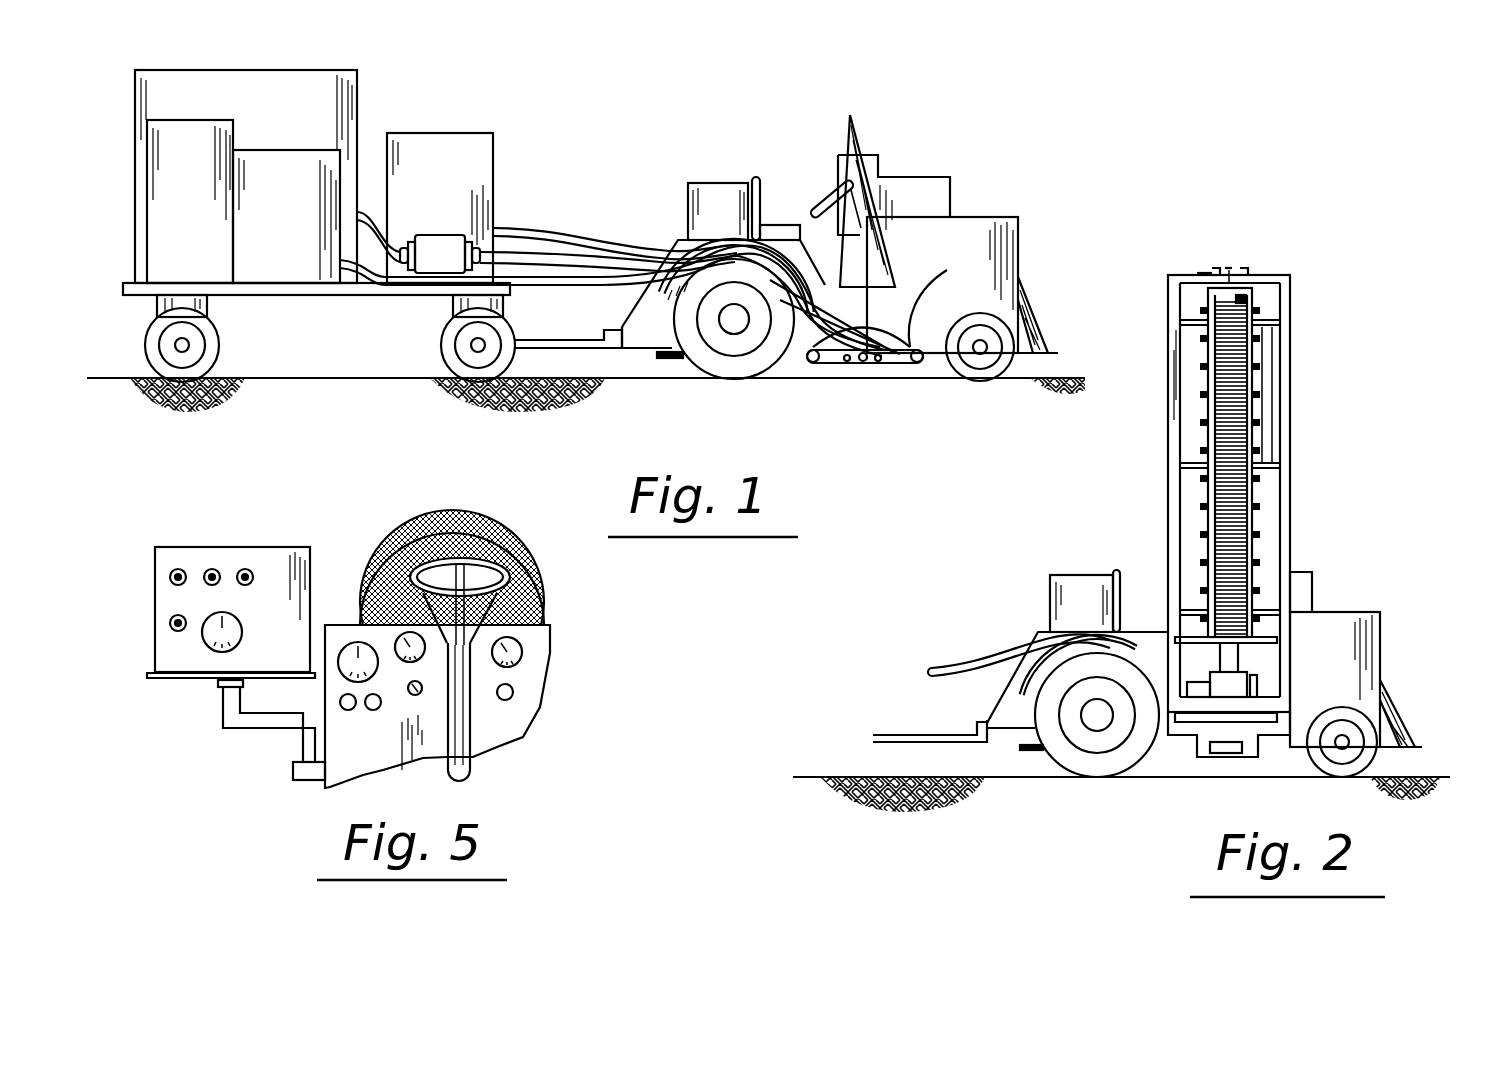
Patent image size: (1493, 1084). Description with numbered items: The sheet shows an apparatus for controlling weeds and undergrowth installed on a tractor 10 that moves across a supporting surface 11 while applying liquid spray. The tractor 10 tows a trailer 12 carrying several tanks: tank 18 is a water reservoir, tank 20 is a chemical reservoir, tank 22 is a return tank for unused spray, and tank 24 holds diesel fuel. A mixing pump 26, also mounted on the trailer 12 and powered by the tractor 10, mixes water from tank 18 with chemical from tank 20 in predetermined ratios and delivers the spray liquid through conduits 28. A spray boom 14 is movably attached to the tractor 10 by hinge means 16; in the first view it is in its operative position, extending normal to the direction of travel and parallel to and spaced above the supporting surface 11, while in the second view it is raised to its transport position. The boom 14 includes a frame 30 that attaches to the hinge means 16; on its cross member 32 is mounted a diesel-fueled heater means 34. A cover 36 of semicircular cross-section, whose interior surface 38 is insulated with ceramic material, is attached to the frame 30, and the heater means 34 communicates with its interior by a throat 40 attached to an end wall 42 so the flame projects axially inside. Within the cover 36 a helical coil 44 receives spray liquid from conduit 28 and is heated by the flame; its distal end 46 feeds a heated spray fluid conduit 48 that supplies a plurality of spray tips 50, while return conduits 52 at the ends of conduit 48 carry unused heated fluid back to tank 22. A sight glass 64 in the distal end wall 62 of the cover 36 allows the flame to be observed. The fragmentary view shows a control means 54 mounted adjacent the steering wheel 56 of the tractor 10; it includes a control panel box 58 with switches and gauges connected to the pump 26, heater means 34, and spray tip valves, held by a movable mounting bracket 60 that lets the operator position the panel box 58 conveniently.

In FIG. 1, the tractor 10 is at (1003, 215).
In FIG. 2, the tractor 10 is at (1350, 612).
In FIG. 1, the supporting surface 11 is at (645, 447).
In FIG. 2, the supporting surface 11 is at (1055, 843).
In FIG. 1, the trailer 12 is at (267, 297).
In FIG. 1, the spray boom 14 is at (850, 368).
In FIG. 2, the spray boom 14 is at (1360, 372).
In FIG. 2, the hinge means 16 is at (1203, 757).
In FIG. 1, the tank 18 is at (312, 109).
In FIG. 1, the tank 20 is at (265, 208).
In FIG. 1, the tank 22 is at (480, 179).
In FIG. 1, the tank 24 is at (207, 189).
In FIG. 1, the mixing pump 26 is at (438, 267).
In FIG. 1, the conduits 28 is at (373, 225).
In FIG. 2, the conduits 28 is at (947, 667).
In FIG. 2, the frame 30 is at (1170, 452).
In FIG. 2, the cross member 32 is at (1260, 722).
In FIG. 2, the heater means 34 is at (1266, 681).
In FIG. 1, the cover 36 is at (946, 300).
In FIG. 2, the interior surface 38 is at (1192, 358).
In FIG. 2, the throat 40 is at (1240, 655).
In FIG. 2, the end wall 42 is at (1265, 653).
In FIG. 2, the helical coil 44 is at (1240, 493).
In FIG. 2, the distal end 46 is at (1244, 298).
In FIG. 2, the heated spray fluid conduit 48 is at (1252, 438).
In FIG. 1, the spray tips 50 is at (840, 362).
In FIG. 2, the spray tips 50 is at (1243, 271).
In FIG. 1, the return conduits 52 is at (513, 225).
In FIG. 5, the control means 54 is at (216, 523).
In FIG. 1, the steering wheel 56 is at (827, 190).
In FIG. 5, the steering wheel 56 is at (417, 543).
In FIG. 5, the control panel box 58 is at (297, 627).
In FIG. 5, the movable mounting bracket 60 is at (250, 728).
In FIG. 1, the distal end wall 62 is at (890, 355).
In FIG. 2, the distal end wall 62 is at (1197, 273).
In FIG. 1, the sight glass 64 is at (863, 362).
In FIG. 2, the sight glass 64 is at (1227, 270).